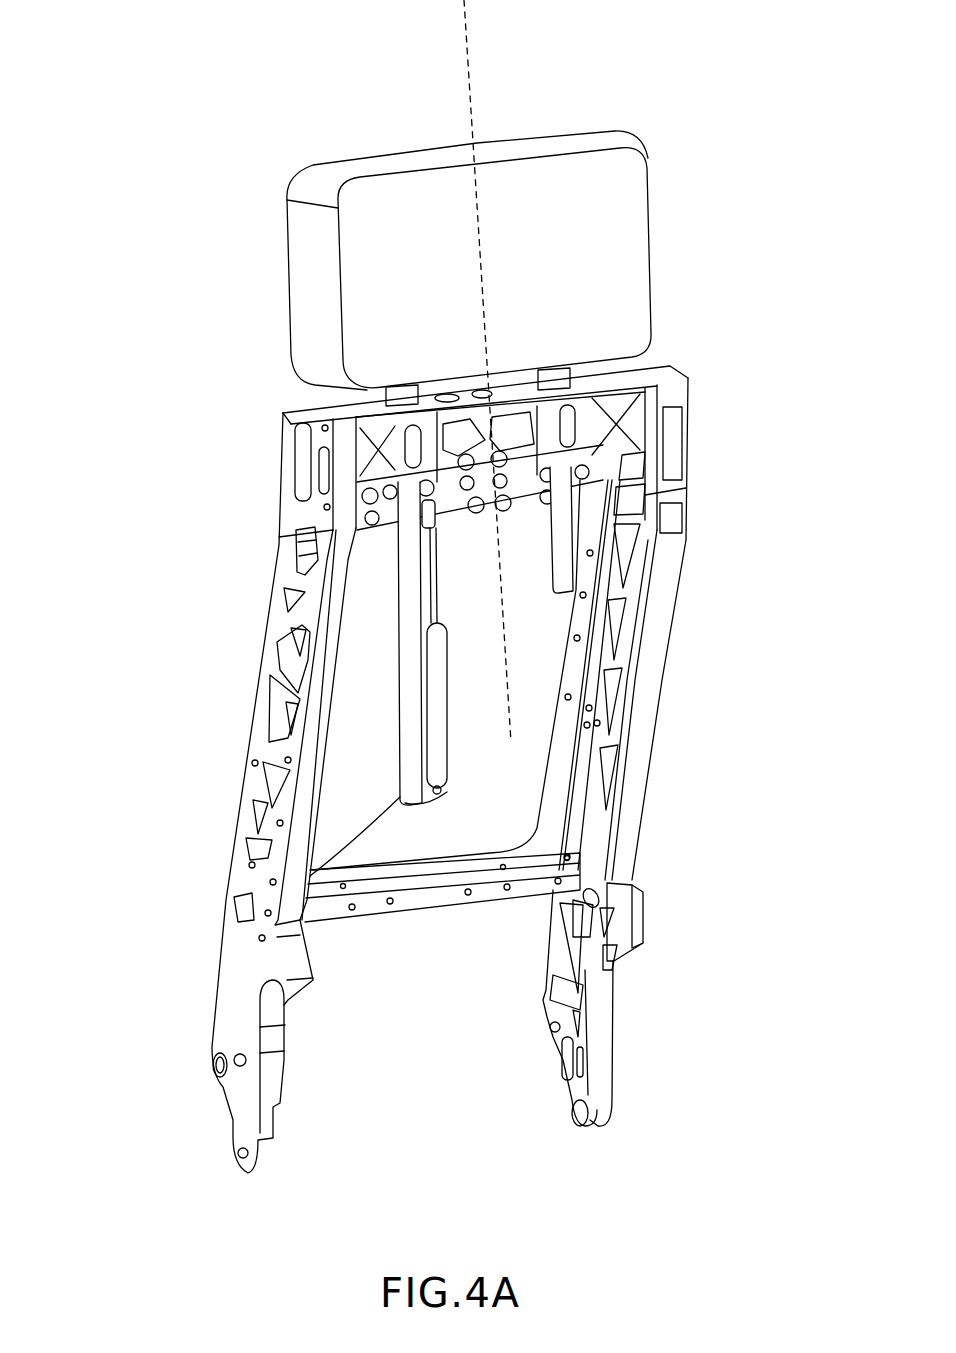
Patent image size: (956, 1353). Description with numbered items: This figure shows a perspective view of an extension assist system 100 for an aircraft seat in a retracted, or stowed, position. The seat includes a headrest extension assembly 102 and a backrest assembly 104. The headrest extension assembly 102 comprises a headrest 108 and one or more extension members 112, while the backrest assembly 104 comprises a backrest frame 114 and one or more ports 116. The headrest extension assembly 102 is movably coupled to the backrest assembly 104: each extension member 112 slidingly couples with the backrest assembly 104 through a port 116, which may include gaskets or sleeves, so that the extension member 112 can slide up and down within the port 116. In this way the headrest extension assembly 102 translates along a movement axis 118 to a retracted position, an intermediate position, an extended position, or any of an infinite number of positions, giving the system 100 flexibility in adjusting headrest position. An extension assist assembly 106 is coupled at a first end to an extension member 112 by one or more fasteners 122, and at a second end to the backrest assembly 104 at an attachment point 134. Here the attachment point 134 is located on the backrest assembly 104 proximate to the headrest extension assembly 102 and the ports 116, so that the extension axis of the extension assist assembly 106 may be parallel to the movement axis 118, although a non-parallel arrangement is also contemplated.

The extension assist system 100 is at (191, 121).
The headrest extension assembly 102 is at (697, 242).
The backrest assembly 104 is at (690, 758).
The extension assist assembly 106 is at (433, 722).
The headrest 108 is at (313, 286).
The extension member 112 is at (405, 576).
The backrest frame 114 is at (660, 604).
The port 116 is at (386, 390).
The movement axis 118 is at (464, 42).
The fastener 122 is at (437, 797).
The attachment point 134 is at (428, 519).